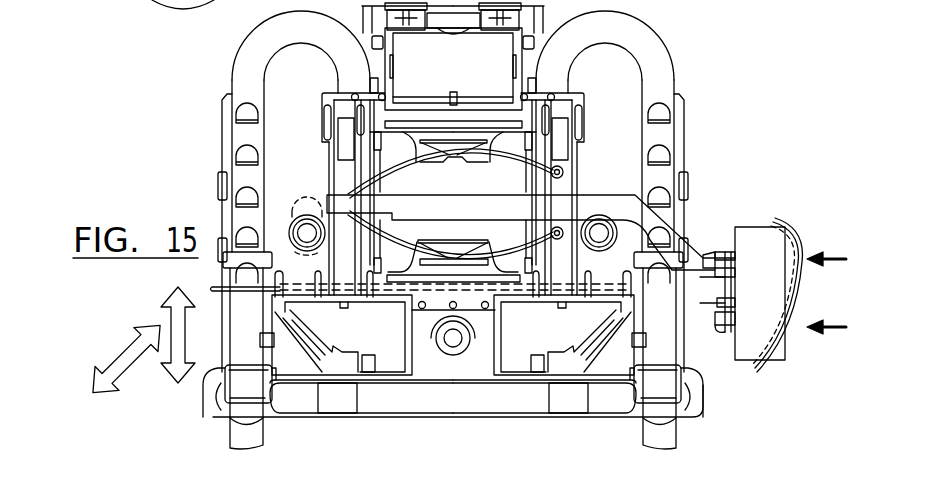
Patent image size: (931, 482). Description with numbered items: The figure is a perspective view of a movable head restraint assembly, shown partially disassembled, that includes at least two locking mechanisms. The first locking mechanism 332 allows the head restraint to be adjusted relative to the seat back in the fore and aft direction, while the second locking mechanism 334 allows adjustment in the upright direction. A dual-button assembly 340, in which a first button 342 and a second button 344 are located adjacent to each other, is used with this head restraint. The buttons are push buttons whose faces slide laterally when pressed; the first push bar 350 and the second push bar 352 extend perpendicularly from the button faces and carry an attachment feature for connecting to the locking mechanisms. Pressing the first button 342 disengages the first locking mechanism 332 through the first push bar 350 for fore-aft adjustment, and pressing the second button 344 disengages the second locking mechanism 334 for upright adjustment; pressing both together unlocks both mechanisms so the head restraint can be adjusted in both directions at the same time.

The first locking mechanism 332 is at (512, 178).
The second locking mechanism 334 is at (566, 298).
The dual-button assembly 340 is at (758, 220).
The first button 342 is at (803, 248).
The second button 344 is at (792, 325).
The first push bar 350 is at (728, 250).
The second push bar 352 is at (728, 330).